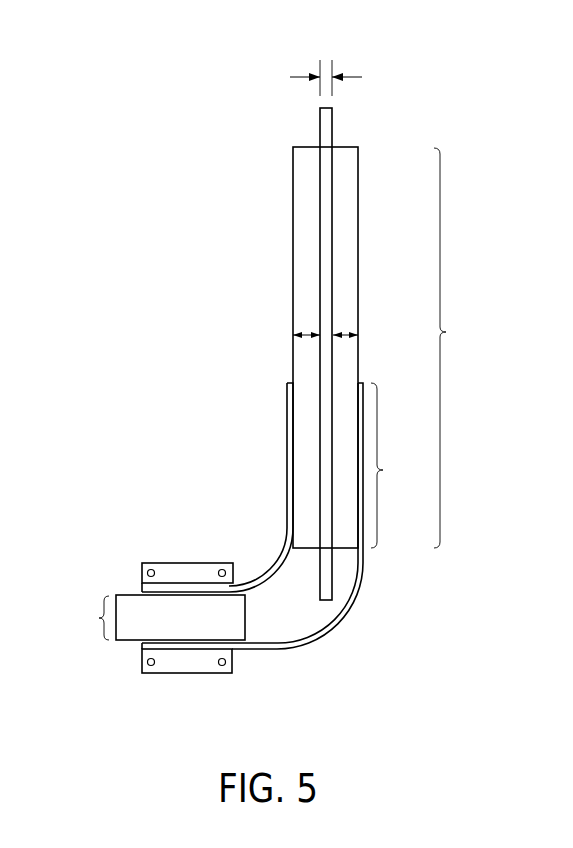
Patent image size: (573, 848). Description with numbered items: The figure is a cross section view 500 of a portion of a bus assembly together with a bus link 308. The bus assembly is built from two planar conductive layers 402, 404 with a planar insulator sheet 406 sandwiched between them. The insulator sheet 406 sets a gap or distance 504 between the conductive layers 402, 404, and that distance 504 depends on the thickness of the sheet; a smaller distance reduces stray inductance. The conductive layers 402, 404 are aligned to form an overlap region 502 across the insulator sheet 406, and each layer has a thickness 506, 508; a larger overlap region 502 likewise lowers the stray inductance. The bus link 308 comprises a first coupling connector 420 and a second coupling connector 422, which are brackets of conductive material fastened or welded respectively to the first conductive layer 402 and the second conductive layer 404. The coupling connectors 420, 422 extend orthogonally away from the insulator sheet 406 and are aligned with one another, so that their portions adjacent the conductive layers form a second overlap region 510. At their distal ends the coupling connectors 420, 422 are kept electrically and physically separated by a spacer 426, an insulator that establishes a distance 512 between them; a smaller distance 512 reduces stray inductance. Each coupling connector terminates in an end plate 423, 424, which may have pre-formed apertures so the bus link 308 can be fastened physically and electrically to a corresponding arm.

The cross section view 500 is at (134, 56).
The overlap region 502 is at (462, 348).
The distance 504 is at (352, 77).
The thickness 506 is at (308, 337).
The thickness 508 is at (345, 340).
The second overlap region 510 is at (398, 465).
The distance 512 is at (84, 618).
The conductive layer 402 is at (293, 203).
The conductive layer 404 is at (345, 255).
The insulator sheet 406 is at (333, 124).
The bus link 308 is at (205, 516).
The first coupling connector 420 is at (263, 568).
The second coupling connector 422 is at (282, 651).
The end plate 423 is at (170, 563).
The end plate 424 is at (168, 674).
The spacer 426 is at (197, 626).